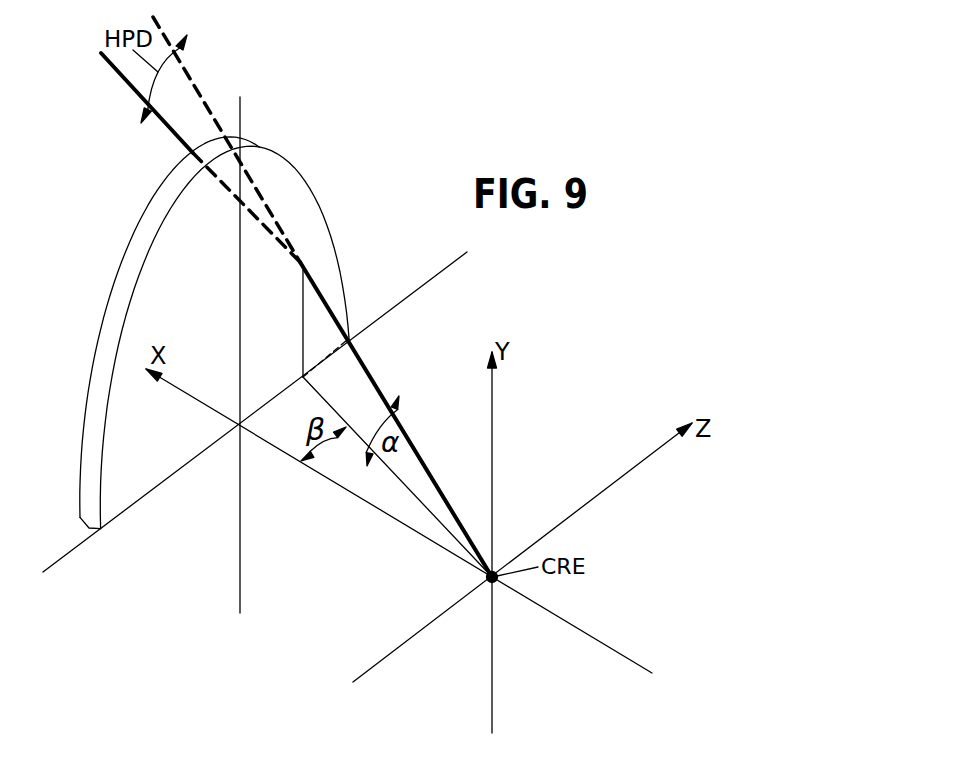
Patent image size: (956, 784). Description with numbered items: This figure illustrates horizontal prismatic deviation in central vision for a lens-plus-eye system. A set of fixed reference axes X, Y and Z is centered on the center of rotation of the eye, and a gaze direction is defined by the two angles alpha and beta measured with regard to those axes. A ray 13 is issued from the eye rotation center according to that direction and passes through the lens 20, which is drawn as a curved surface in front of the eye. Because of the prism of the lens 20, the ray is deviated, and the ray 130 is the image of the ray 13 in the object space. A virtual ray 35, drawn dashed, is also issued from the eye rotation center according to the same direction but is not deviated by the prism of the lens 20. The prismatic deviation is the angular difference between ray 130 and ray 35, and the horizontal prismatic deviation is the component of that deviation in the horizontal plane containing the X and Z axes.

The ray 13 is at (412, 442).
The lens 20 is at (295, 163).
The virtual ray 35 is at (203, 93).
The image ray 130 is at (115, 72).